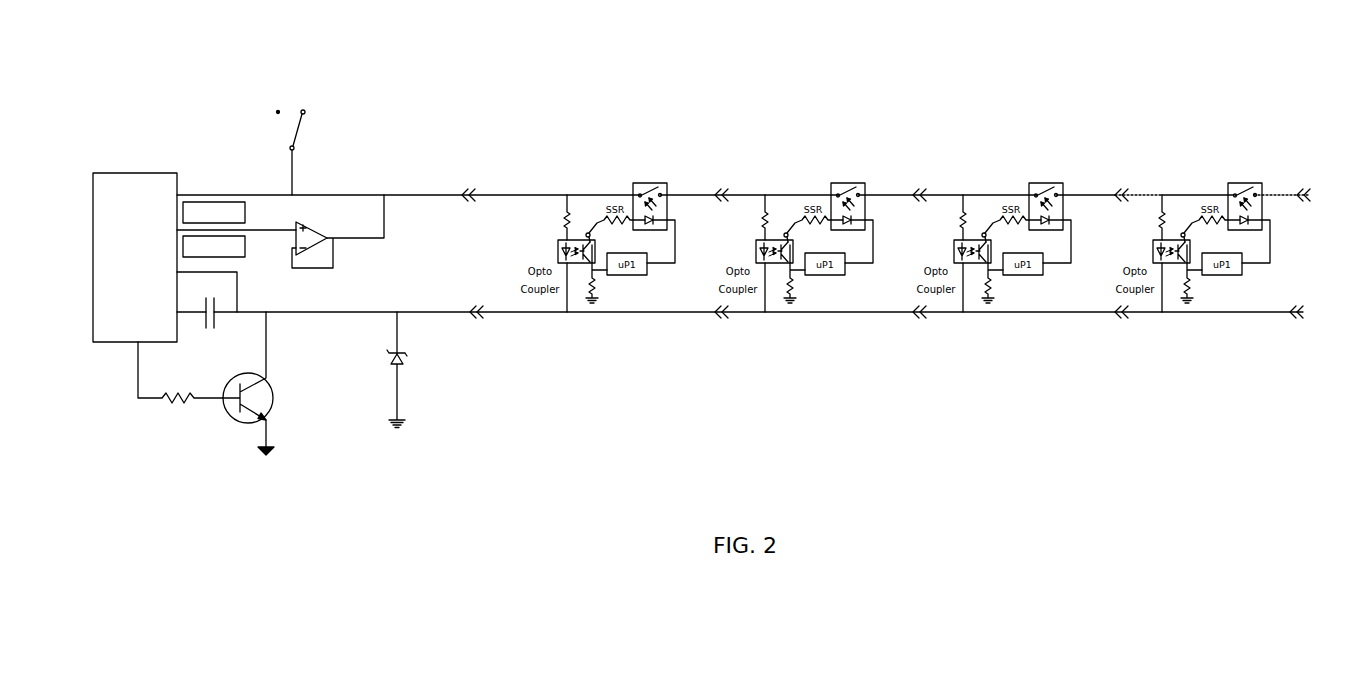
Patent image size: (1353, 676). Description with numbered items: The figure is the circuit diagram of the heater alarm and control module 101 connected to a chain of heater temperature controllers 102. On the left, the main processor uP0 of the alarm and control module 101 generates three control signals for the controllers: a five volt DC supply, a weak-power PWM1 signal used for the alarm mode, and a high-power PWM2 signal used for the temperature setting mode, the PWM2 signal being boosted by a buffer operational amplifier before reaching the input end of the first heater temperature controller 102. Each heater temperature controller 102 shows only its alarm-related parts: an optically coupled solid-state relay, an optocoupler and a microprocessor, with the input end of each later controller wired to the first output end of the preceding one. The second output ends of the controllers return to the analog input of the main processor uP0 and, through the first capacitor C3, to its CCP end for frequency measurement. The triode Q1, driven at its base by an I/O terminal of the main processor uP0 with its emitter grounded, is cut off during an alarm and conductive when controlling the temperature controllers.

The alarm and control module 101 is at (385, 144).
The heater temperature controller 102 is at (612, 163).
The main processor uP0 is at (135, 257).
The weak-power PWM1 signal PWM1 is at (214, 212).
The high-power PWM2 signal PWM2 is at (214, 246).
The first capacitor C3 is at (209, 322).
The triode Q1 is at (240, 383).